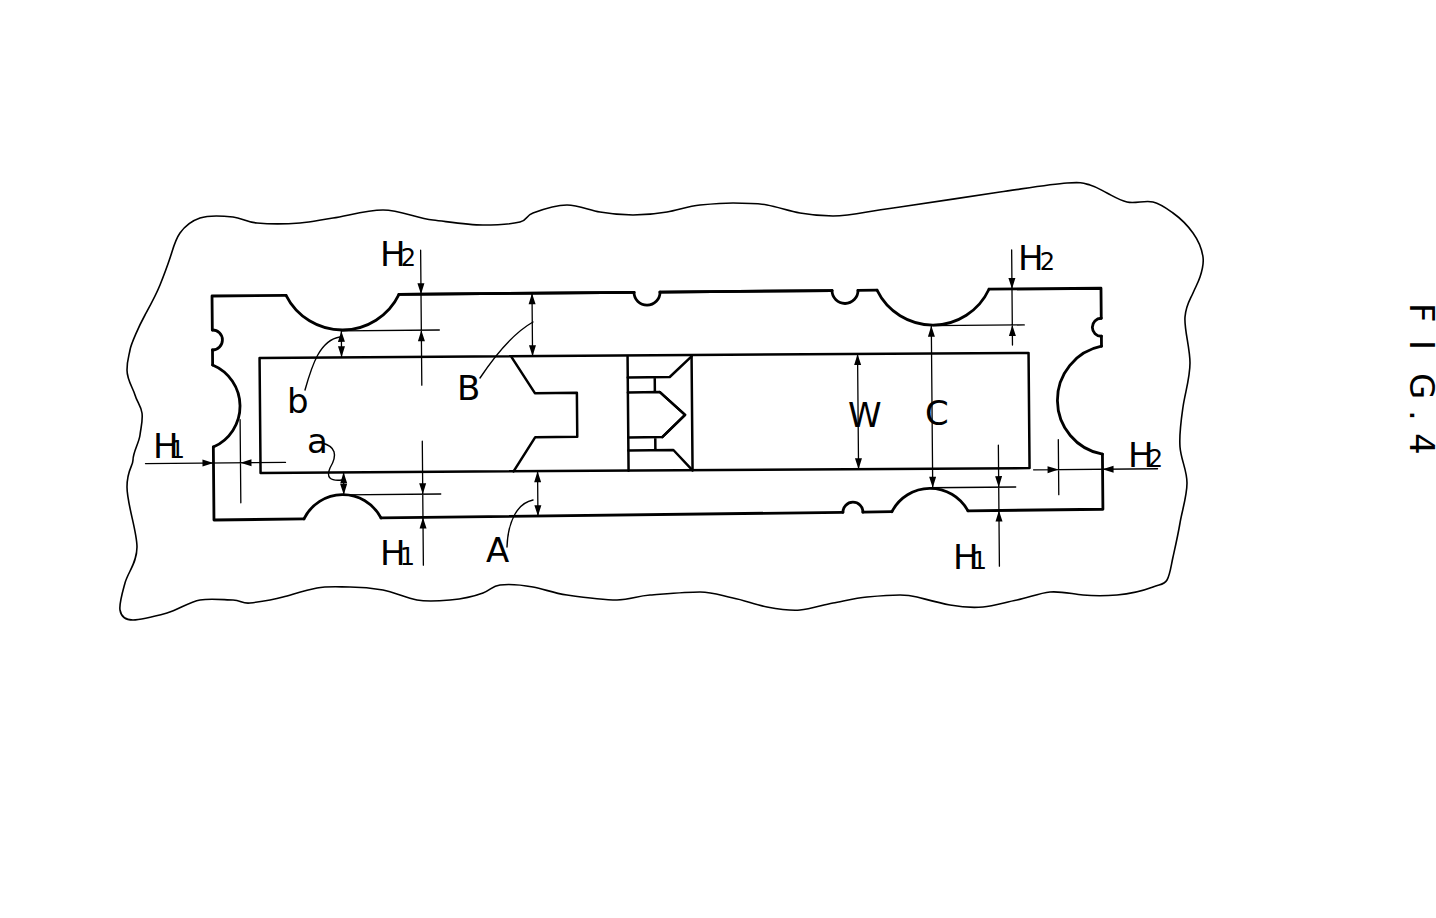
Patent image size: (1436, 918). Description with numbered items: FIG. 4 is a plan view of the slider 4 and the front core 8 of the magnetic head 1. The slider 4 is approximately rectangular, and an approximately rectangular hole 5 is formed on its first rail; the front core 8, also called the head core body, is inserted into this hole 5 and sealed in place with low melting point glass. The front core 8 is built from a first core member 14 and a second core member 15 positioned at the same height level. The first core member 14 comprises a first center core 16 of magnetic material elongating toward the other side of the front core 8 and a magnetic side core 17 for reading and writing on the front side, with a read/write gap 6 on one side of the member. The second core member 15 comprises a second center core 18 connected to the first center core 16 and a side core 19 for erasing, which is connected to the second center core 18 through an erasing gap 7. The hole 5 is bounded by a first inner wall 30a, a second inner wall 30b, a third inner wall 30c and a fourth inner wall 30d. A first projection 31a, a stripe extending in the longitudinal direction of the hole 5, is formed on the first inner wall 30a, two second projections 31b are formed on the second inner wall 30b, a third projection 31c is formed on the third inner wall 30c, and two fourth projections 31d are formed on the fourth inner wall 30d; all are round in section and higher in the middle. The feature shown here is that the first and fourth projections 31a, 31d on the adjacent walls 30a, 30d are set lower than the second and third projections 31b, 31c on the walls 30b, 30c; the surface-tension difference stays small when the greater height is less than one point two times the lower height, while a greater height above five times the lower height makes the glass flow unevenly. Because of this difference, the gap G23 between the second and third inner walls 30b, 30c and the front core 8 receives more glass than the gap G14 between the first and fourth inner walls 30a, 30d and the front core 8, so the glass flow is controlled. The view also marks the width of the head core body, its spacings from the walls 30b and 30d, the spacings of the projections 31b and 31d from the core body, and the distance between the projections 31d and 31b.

The magnetic head 1 is at (1193, 197).
The slider 4 is at (1160, 262).
The hole 5 is at (866, 291).
The read/write gap 6 is at (572, 417).
The erasing gap 7 is at (680, 405).
The front core 8 is at (793, 318).
The first core member 14 is at (453, 332).
The second core member 15 is at (765, 340).
The first center core 16 is at (605, 415).
The side core 17 is at (483, 452).
The second center core 18 is at (652, 420).
The side core for erasing 19 is at (760, 442).
The first inner wall 30a is at (213, 328).
The second inner wall 30b is at (663, 292).
The third inner wall 30c is at (1100, 335).
The fourth inner wall 30d is at (843, 513).
The first projection 31a is at (230, 395).
The second projection 31b is at (330, 323).
The third projection 31c is at (1068, 407).
The fourth projection 31d is at (346, 500).
The gap G14 is at (215, 497).
The gap G23 is at (500, 312).